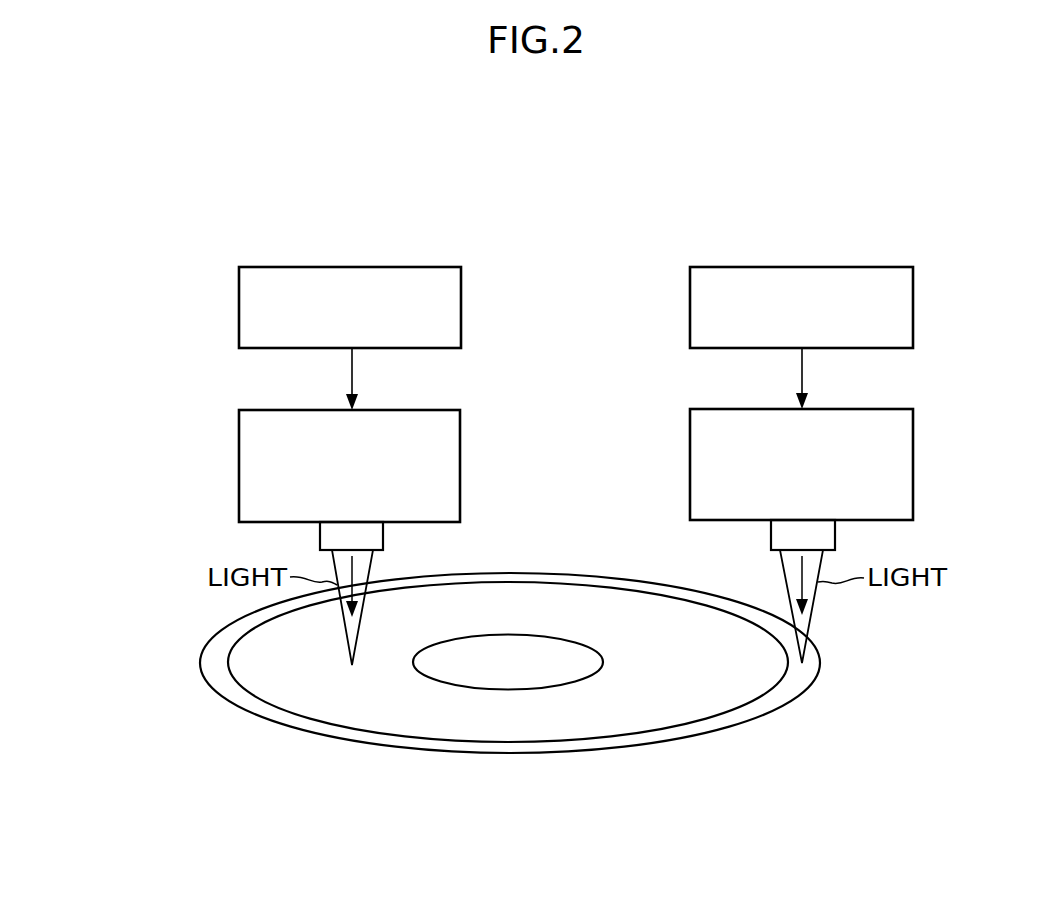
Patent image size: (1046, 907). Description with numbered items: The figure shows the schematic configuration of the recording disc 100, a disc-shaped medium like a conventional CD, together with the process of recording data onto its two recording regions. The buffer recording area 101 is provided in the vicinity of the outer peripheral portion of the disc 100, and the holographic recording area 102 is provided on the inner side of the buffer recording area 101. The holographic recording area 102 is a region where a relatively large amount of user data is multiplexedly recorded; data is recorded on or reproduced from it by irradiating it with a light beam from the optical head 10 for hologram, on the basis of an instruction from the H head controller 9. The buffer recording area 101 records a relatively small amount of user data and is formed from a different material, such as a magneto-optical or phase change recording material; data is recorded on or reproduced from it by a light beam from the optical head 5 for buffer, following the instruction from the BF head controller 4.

The H head controller 9 is at (433, 267).
The optical head for hologram 10 is at (448, 410).
The BF head controller 4 is at (882, 267).
The optical head for buffer 5 is at (897, 409).
The recording disc 100 is at (489, 729).
The buffer recording area 101 is at (688, 730).
The holographic recording area 102 is at (329, 697).